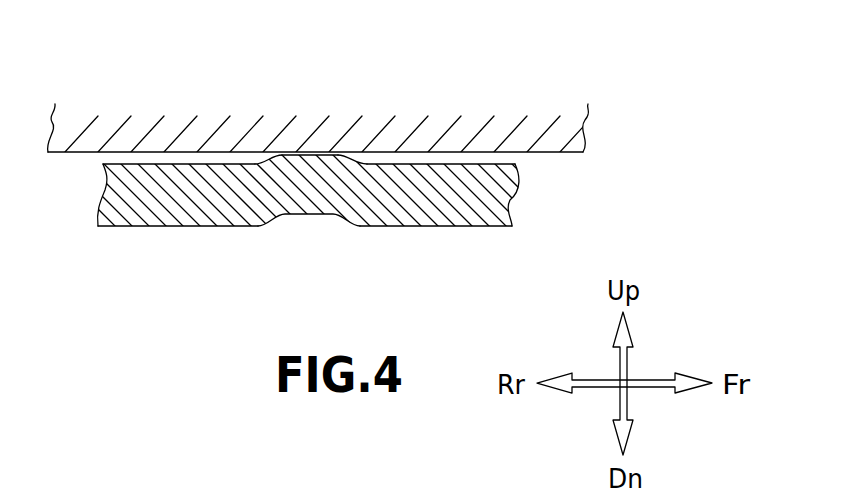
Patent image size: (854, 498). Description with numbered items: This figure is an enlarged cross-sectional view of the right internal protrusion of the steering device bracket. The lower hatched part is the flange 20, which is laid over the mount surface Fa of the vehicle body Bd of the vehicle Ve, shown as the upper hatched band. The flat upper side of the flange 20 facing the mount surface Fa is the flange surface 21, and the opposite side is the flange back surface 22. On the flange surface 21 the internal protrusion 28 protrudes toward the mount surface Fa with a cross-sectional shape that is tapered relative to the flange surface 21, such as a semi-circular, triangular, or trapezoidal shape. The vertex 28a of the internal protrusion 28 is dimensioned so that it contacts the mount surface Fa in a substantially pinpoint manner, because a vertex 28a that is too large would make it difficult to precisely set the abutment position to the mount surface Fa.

The flange 20 is at (322, 193).
The flange surface 21 is at (181, 165).
The flange back surface 22 is at (172, 227).
The internal protrusion 28 is at (288, 158).
The vertex of internal protrusion 28a is at (318, 160).
The vehicle Ve is at (350, 121).
The vehicle body Bd is at (568, 131).
The mount surface Fa is at (543, 153).